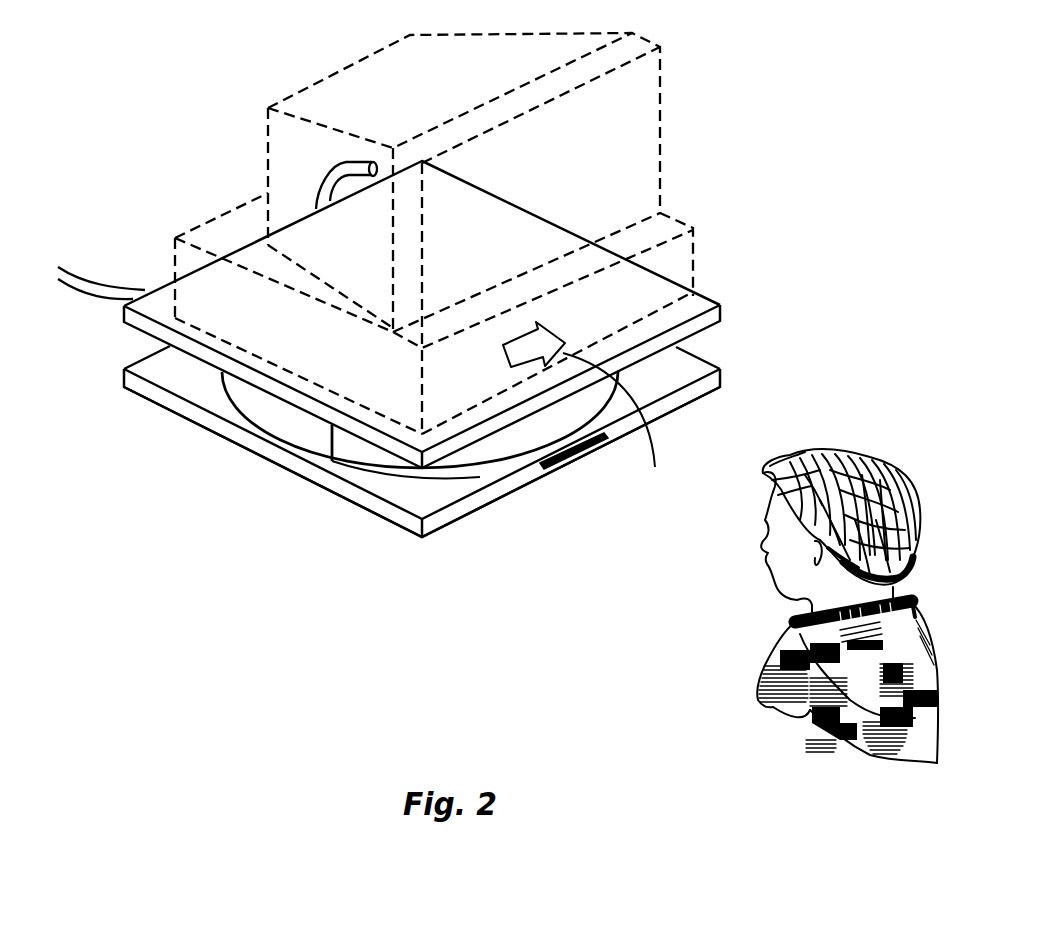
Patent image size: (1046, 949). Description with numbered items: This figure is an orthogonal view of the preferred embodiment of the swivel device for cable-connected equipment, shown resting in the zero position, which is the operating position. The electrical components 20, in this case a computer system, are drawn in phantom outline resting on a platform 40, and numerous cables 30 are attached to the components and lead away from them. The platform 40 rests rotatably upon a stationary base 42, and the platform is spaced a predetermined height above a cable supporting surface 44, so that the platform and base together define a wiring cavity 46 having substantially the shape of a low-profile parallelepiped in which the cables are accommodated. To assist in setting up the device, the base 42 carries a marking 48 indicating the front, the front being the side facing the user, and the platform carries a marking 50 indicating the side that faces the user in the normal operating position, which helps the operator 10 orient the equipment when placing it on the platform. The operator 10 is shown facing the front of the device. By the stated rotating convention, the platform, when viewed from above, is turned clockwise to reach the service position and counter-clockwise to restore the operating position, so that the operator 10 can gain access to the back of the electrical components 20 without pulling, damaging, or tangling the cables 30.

The operator 10 is at (772, 707).
The electrical components 20 is at (693, 257).
The cables 30 is at (330, 168).
The platform 40 is at (693, 327).
The stationary base 42 is at (337, 483).
The cable supporting surface 44 is at (262, 410).
The wiring cavity 46 is at (135, 349).
The marking 48 is at (563, 462).
The marking 50 is at (584, 410).